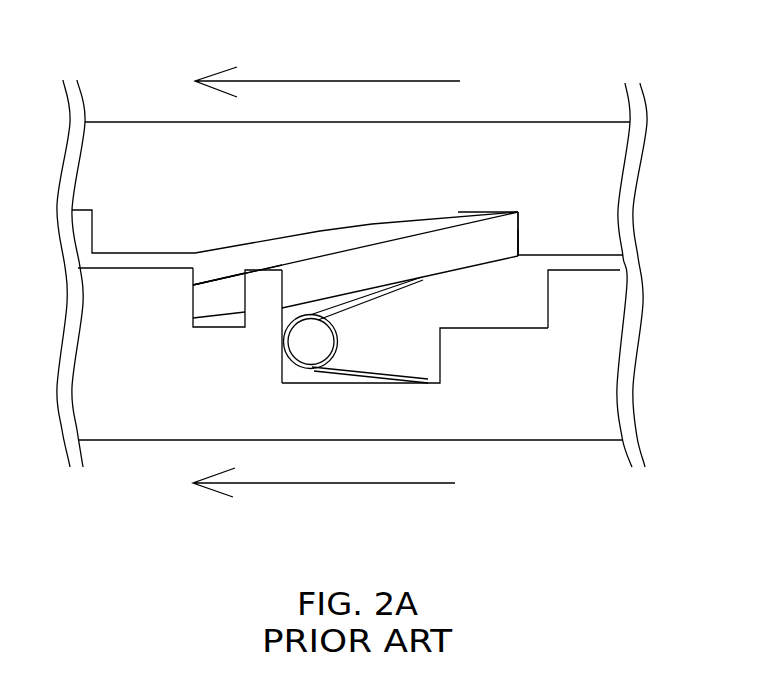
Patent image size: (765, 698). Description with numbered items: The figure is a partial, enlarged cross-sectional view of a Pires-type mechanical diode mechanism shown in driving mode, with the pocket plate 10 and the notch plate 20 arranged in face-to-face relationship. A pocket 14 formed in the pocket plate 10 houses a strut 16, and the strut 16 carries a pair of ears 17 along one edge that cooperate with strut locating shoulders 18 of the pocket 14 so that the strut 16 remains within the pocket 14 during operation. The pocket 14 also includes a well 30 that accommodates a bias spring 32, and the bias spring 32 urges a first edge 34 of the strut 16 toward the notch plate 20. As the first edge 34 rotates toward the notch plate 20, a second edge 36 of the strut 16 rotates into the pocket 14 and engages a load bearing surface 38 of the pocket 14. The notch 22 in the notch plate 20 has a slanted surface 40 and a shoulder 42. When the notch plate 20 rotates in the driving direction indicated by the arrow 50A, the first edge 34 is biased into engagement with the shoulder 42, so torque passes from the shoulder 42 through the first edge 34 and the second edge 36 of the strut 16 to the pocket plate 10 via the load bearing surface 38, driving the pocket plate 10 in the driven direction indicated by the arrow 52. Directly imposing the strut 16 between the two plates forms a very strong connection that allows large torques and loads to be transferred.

The pocket plate 10 is at (517, 455).
The pocket 14 is at (543, 337).
The strut 16 is at (370, 285).
The ears 17 is at (225, 277).
The strut locating shoulders 18 is at (258, 320).
The notch plate 20 is at (548, 110).
The notch 22 is at (400, 212).
The recess floor of first body 30 is at (425, 340).
The bias spring 32 is at (342, 310).
The first edge 34 is at (518, 240).
The second edge 36 is at (195, 297).
The load bearing surface 38 is at (192, 315).
The slanted surface 40 is at (272, 240).
The shoulder 42 is at (520, 223).
The arrow indicating driving direction 50A is at (343, 81).
The arrow indicating driven direction 52 is at (370, 485).